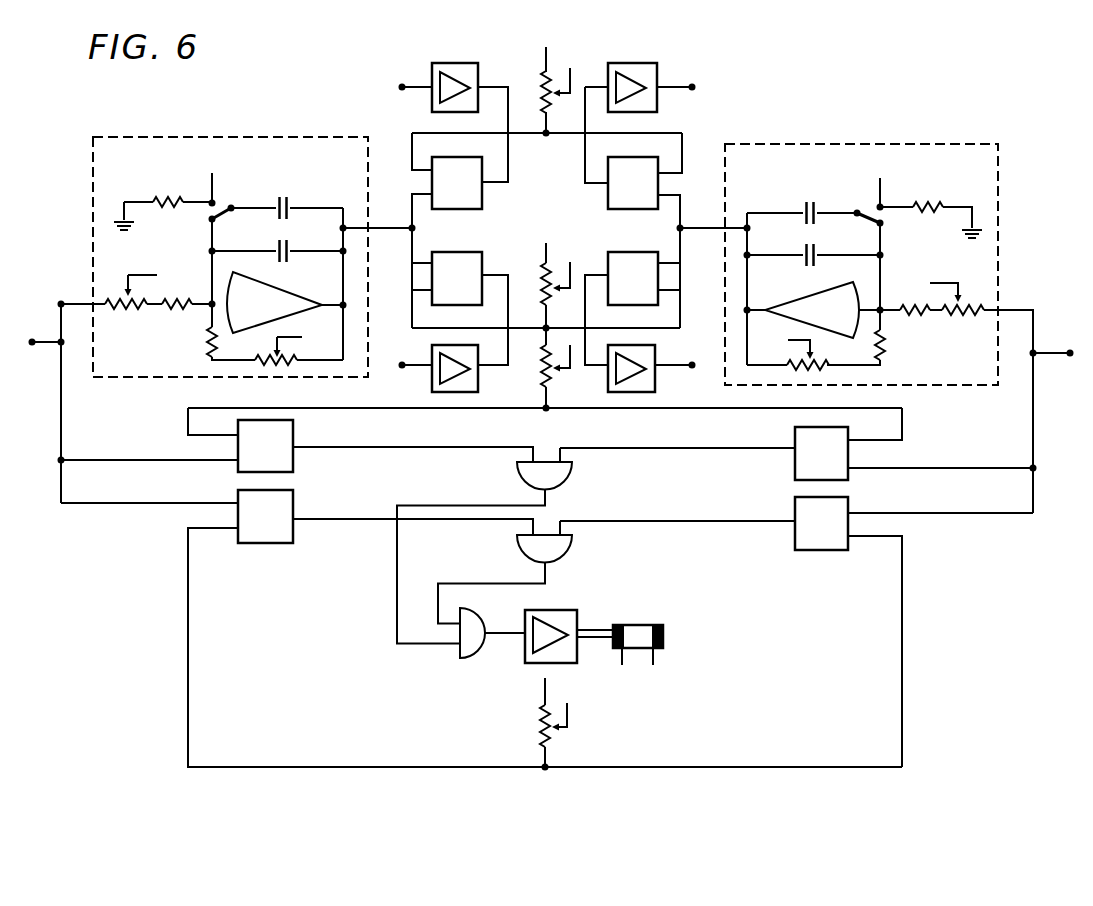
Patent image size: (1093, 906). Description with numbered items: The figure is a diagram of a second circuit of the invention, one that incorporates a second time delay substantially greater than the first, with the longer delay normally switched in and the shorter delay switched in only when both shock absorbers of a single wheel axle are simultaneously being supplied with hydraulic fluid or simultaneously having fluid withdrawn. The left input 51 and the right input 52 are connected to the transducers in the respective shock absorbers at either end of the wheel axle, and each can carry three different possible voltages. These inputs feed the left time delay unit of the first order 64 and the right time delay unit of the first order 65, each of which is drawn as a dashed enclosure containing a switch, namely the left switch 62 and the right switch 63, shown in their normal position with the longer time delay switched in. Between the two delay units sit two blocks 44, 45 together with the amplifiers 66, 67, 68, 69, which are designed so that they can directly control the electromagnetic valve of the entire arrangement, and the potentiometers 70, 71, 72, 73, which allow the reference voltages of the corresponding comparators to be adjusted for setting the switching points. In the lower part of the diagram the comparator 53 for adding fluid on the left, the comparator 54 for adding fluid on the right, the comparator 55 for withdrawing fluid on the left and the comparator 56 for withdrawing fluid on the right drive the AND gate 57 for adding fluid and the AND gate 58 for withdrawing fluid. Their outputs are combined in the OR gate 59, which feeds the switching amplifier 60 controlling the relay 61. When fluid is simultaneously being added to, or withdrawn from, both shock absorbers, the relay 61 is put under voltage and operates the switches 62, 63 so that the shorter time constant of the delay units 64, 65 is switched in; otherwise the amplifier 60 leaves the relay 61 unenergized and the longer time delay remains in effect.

The first phase detector/mixer block 44 is at (447, 209).
The second phase detector/mixer block 45 is at (627, 210).
The left input 51 is at (33, 340).
The right input 52 is at (1069, 352).
The comparator (add fluid left) 53 is at (293, 466).
The comparator (add fluid right) 54 is at (795, 469).
The comparator (withdraw fluid left) 55 is at (275, 543).
The comparator (withdraw fluid right) 56 is at (810, 548).
The AND gate (add fluid) 57 is at (572, 467).
The AND gate (withdraw fluid) 58 is at (565, 541).
The OR gate 59 is at (460, 659).
The switching amplifier 60 is at (565, 656).
The relay 61 is at (638, 631).
The switch (left) 62 is at (221, 207).
The switch (right) 63 is at (860, 211).
The time delay unit of the first order (left) 64 is at (183, 146).
The time delay unit of the first order (right) 65 is at (803, 151).
The amplifier 66 is at (432, 106).
The amplifier 67 is at (432, 383).
The amplifier 68 is at (657, 105).
The amplifier 69 is at (655, 387).
The potentiometer 70 is at (540, 98).
The potentiometer 71 is at (540, 283).
The potentiometer 72 is at (541, 370).
The potentiometer 73 is at (540, 730).